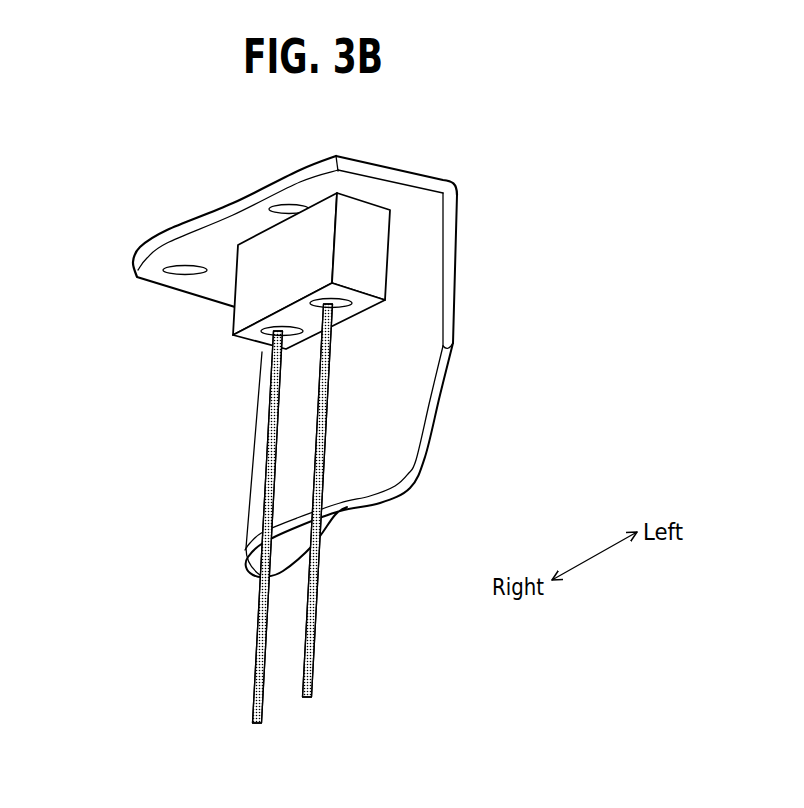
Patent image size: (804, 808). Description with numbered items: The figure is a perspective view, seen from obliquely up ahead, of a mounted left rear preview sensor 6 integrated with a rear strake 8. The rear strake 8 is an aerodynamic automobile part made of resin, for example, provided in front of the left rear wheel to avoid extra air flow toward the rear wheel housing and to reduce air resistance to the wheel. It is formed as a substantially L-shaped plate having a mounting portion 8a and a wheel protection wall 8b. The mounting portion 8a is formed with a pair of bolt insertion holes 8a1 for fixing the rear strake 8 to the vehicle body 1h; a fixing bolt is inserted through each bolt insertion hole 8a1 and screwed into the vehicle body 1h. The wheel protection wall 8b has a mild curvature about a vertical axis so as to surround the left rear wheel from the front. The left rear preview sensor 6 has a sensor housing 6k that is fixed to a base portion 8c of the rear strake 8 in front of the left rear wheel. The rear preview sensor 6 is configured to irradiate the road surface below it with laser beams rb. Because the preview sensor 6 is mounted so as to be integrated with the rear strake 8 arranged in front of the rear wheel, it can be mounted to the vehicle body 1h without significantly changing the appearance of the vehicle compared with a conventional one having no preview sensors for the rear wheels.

The rear strake 8 is at (292, 335).
The mounting portion 8a is at (197, 230).
The bolt insertion holes 8a1 is at (273, 218).
The base portion 8c is at (415, 215).
The wheel protection wall 8b is at (453, 356).
The vehicle body 1h is at (364, 130).
The left rear preview sensor 6 is at (257, 304).
The sensor housing 6k is at (252, 275).
The laser beams rb is at (320, 425).